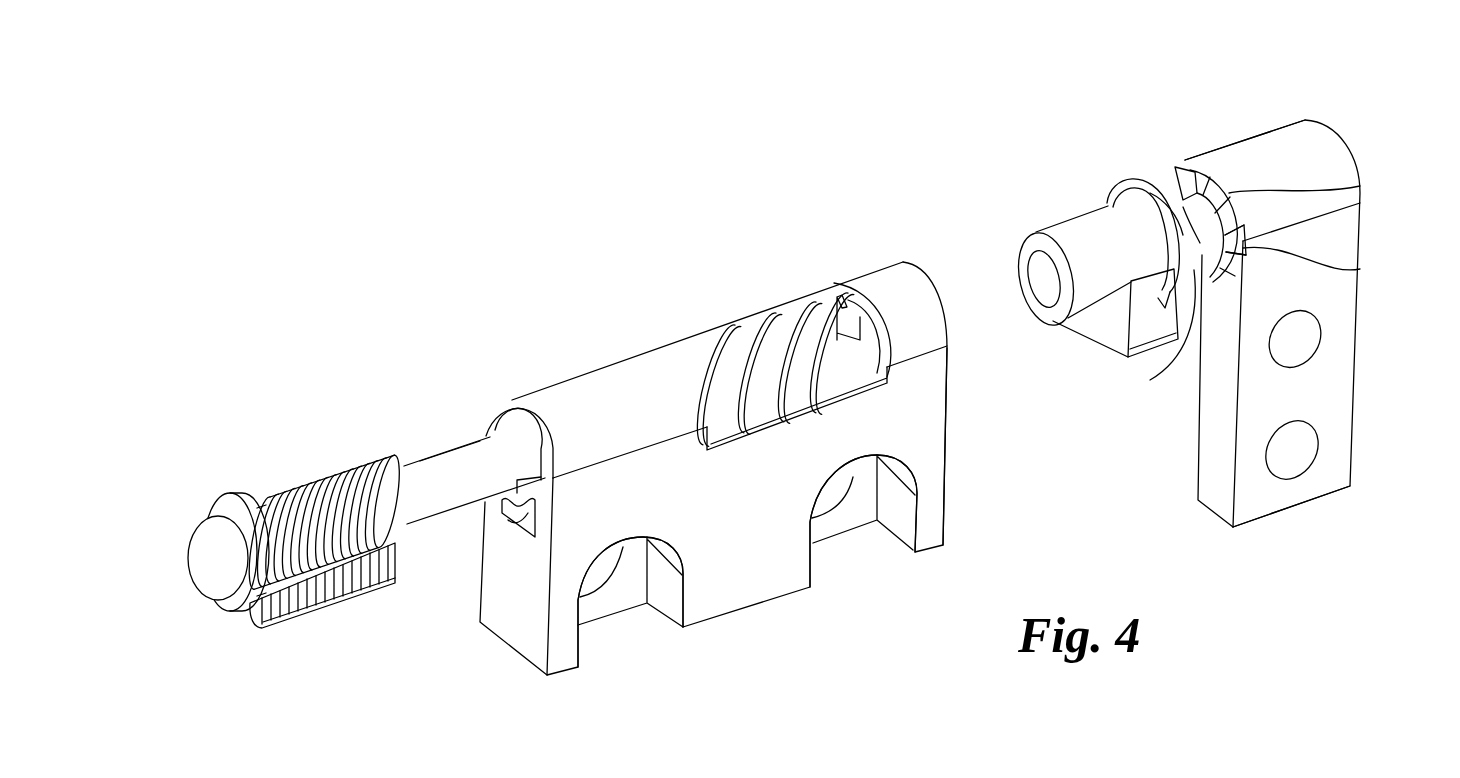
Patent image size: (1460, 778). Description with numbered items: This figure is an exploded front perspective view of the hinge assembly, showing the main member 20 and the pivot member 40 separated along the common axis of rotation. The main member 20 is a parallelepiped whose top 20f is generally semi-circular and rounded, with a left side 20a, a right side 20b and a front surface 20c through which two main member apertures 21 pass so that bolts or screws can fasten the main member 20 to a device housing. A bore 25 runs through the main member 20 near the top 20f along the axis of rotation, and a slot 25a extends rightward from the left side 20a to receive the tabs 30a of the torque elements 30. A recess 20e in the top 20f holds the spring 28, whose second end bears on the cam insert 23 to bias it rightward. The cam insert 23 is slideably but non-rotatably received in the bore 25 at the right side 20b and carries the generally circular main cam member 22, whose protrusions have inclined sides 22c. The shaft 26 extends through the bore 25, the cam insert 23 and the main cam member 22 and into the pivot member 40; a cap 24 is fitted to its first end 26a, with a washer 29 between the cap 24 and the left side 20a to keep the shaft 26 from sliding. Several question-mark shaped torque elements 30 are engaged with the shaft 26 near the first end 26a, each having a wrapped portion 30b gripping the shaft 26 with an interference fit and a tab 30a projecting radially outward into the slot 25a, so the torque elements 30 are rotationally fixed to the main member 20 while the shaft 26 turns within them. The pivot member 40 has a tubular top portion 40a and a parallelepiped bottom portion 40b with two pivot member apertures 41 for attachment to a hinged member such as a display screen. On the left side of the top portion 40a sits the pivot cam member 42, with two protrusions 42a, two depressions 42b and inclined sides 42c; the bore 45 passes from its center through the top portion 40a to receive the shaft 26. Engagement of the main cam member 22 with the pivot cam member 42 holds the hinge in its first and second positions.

The main member 20 is at (920, 430).
The left side 20a is at (535, 637).
The right side 20b is at (947, 397).
The front surface 20c is at (757, 577).
The recess 20e is at (840, 287).
The top 20f is at (628, 373).
The main member apertures 21 is at (603, 575).
The main cam member 22 is at (1140, 188).
The inclined sides 22c is at (1172, 207).
The cam insert 23 is at (1077, 228).
The cap 24 is at (198, 543).
The bore 25 is at (507, 420).
The slot 25a is at (510, 527).
The shaft 26 is at (434, 470).
The first end 26a is at (250, 610).
The spring 28 is at (763, 318).
The washer 29 is at (218, 505).
The torque elements 30 is at (298, 477).
The tab 30a is at (327, 593).
The wrapped portion 30b is at (373, 451).
The pivot member 40 is at (1332, 250).
The top portion 40a is at (1322, 141).
The bottom portion 40b is at (1322, 481).
The pivot member apertures 41 is at (1307, 337).
The pivot cam member 42 is at (1174, 165).
The protrusions 42a is at (1195, 172).
The depressions 42b is at (1238, 224).
The inclined sides 42c is at (1360, 186).
The bore 45 is at (1192, 352).